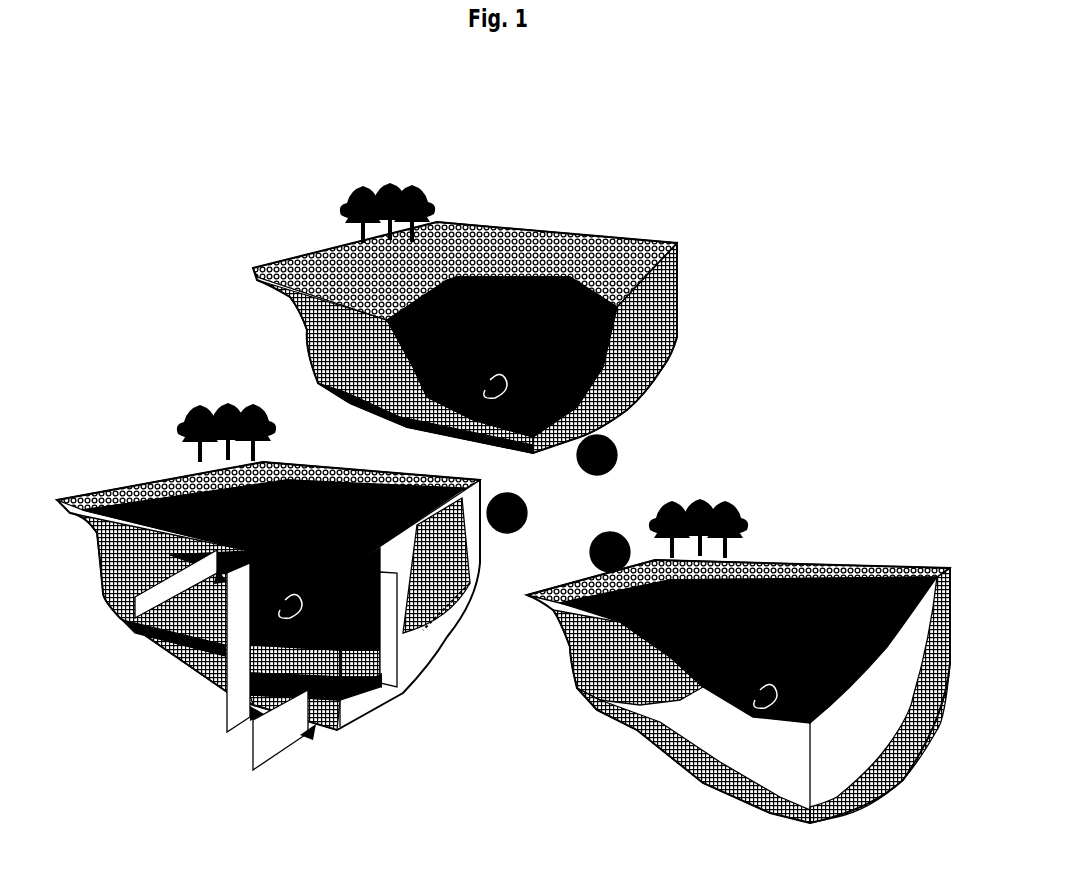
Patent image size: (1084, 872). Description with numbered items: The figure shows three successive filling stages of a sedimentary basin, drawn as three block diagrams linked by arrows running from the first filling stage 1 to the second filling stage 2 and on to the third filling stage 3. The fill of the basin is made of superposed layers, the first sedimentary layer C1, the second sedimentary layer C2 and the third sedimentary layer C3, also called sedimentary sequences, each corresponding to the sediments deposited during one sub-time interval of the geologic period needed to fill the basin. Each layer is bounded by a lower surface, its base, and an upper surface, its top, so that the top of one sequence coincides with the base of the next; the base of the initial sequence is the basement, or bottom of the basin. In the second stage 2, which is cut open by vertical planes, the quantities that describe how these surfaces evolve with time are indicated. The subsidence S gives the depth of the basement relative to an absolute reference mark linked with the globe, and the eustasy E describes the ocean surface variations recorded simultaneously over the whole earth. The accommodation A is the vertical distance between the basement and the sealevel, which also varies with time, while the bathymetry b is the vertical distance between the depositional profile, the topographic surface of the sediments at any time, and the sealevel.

The first sedimentary layer C1 is at (383, 398).
The second sedimentary layer C2 is at (413, 375).
The third sedimentary layer C3 is at (785, 773).
The eustasy E is at (168, 586).
The accommodation A is at (160, 604).
The bathymetry b is at (394, 630).
The subsidence S is at (271, 666).
The first filling stage 1 is at (520, 495).
The second filling stage 2 is at (582, 552).
The third filling stage 3 is at (610, 552).